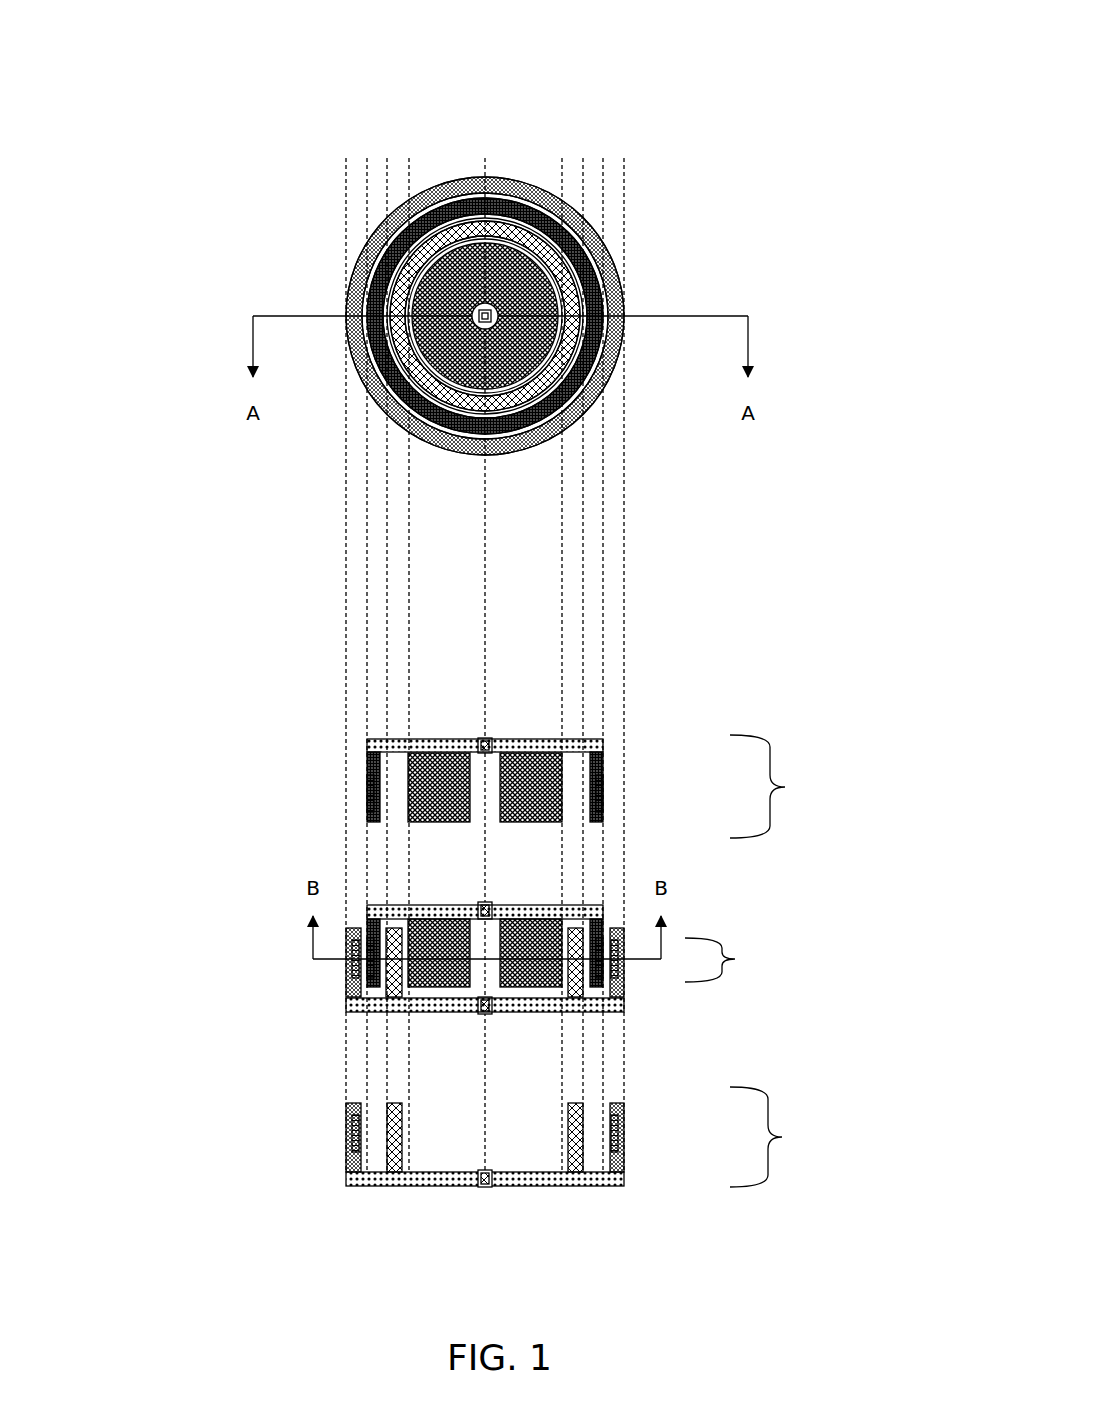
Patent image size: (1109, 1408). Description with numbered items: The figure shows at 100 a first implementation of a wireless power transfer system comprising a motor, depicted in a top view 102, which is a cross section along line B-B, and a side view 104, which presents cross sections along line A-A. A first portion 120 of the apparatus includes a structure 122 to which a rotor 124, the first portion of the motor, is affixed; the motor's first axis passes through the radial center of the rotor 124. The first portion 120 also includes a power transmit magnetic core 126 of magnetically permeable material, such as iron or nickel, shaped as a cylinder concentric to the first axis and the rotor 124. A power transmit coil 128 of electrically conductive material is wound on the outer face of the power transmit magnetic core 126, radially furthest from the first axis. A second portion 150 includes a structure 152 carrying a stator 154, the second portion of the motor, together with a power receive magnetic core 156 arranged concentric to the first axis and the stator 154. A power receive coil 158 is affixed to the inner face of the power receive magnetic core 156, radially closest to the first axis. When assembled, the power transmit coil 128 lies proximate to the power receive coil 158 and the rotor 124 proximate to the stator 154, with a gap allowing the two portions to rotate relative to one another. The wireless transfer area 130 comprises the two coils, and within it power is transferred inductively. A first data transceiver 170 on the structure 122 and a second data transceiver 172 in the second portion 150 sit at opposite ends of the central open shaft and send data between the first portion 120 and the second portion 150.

The wireless power transfer system 100 is at (843, 21).
The top view 102 is at (201, 73).
The side view 104 is at (203, 533).
The first portion 120 is at (815, 786).
The structure 122 is at (458, 745).
The rotor 124 is at (540, 267).
The power transmit magnetic core 126 is at (367, 760).
The power transmit coil 128 is at (272, 830).
The wireless transfer area 130 is at (811, 957).
The second portion 150 is at (826, 1137).
The structure 152 is at (447, 1187).
The stator 154 is at (578, 274).
The power receive magnetic core 156 is at (258, 1197).
The power receive coil 158 is at (260, 1091).
The first data transceiver 170 is at (487, 310).
The second data transceiver 172 is at (489, 1186).